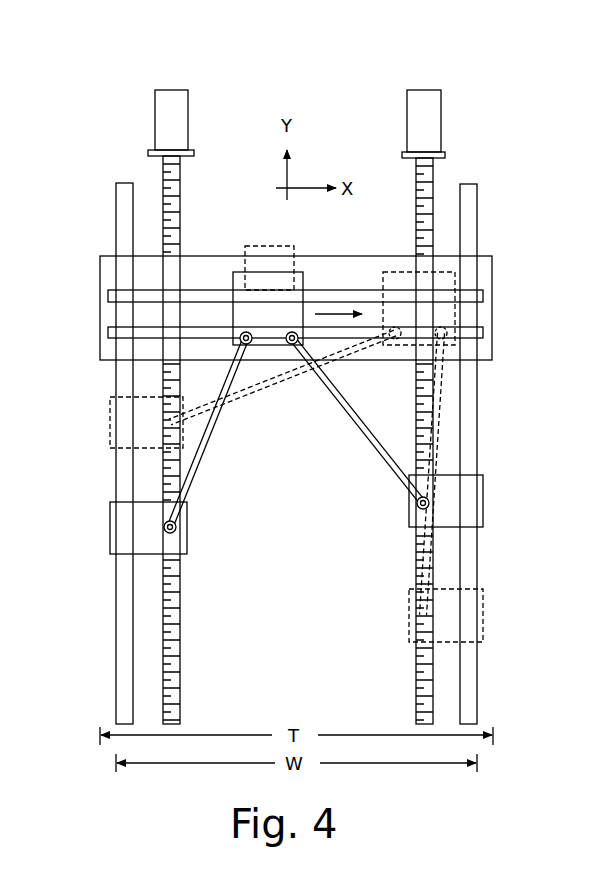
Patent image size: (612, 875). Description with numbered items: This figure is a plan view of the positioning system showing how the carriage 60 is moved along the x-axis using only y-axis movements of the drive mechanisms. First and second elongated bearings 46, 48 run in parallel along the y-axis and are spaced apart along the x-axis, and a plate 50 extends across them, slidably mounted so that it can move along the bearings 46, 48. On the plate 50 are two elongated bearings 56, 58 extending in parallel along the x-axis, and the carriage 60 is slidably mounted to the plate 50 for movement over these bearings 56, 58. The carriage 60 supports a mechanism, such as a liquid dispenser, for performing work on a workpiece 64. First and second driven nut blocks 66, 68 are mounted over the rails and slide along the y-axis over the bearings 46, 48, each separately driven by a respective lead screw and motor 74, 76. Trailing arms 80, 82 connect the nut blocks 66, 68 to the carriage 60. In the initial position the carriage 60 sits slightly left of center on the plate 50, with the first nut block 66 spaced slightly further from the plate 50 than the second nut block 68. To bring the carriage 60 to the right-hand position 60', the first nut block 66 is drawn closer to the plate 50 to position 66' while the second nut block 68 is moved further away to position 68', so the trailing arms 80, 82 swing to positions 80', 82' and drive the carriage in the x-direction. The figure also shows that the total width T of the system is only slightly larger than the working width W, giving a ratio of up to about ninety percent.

The first elongated bearing 46 is at (116, 608).
The second elongated bearing 48 is at (472, 568).
The plate 50 is at (492, 272).
The elongated bearing 56 is at (108, 295).
The elongated bearing 58 is at (108, 333).
The carriage 60 is at (293, 287).
The carriage position 60' is at (468, 308).
The workpiece 64 is at (262, 246).
The first driven nut block 66 is at (170, 528).
The first nut block position 66' is at (115, 422).
The second driven nut block 68 is at (475, 493).
The second nut block position 68' is at (480, 614).
The motor 74 is at (175, 90).
The motor 76 is at (432, 110).
The trailing arm 80 is at (212, 432).
The trailing arm position 80' is at (282, 381).
The trailing arm 82 is at (358, 420).
The trailing arm position 82' is at (470, 474).